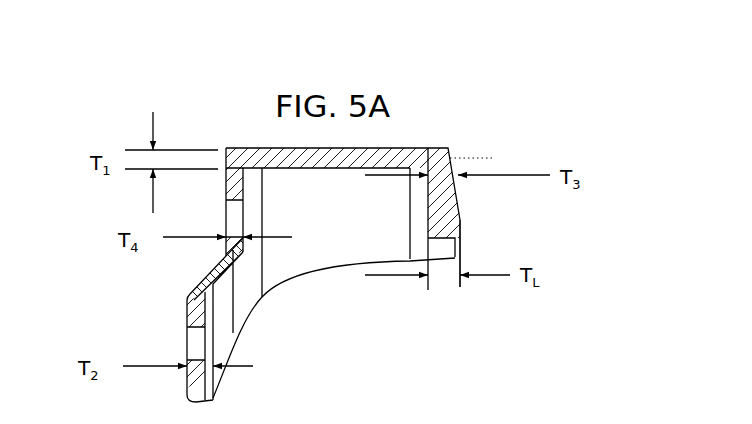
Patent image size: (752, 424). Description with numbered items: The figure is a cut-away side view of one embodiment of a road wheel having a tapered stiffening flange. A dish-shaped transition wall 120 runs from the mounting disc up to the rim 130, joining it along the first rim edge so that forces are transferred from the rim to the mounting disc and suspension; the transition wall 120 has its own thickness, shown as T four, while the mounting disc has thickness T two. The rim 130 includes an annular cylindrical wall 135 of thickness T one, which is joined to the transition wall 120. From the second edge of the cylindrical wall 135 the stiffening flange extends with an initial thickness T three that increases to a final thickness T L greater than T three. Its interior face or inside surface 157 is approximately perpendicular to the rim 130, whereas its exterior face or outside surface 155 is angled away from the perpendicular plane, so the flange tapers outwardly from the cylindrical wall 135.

The transition wall 120 is at (205, 278).
The rim 130 is at (290, 160).
The annular cylindrical wall 135 is at (431, 146).
The outside surface 155 is at (466, 212).
The inside surface 157 is at (424, 225).